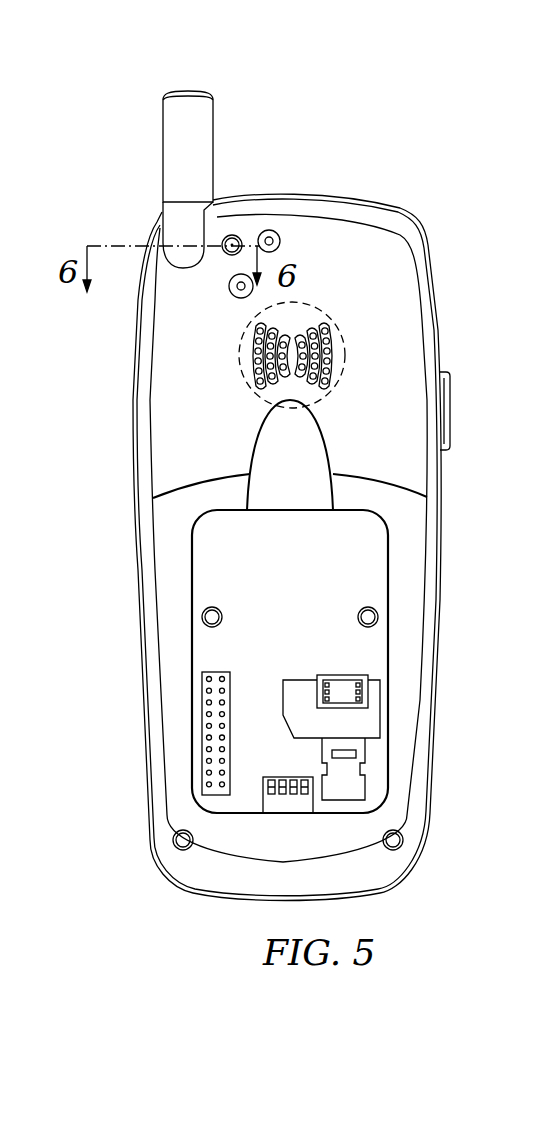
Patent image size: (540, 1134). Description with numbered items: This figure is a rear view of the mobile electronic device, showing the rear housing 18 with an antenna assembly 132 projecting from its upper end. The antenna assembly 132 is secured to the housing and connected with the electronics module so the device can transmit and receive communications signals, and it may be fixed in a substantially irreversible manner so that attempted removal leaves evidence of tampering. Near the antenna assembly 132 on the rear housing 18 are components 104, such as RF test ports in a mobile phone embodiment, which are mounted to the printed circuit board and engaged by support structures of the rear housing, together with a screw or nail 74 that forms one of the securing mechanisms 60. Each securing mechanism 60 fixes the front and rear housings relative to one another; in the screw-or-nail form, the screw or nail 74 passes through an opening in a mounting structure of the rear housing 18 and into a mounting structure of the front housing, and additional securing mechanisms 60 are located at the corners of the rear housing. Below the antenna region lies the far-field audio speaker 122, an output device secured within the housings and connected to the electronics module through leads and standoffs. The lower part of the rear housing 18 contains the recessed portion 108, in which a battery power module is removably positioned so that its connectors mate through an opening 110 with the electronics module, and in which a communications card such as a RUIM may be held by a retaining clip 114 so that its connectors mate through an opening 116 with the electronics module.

The rear housing 18 is at (413, 340).
The securing mechanism 60 is at (203, 610).
The screw or nail 74 is at (235, 235).
The component 104 is at (273, 230).
The recessed portion 108 is at (383, 538).
The opening 110 is at (276, 808).
The retaining clip 114 is at (353, 790).
The opening 116 is at (374, 687).
The far-field audio speaker 122 is at (350, 309).
The antenna assembly 132 is at (172, 159).